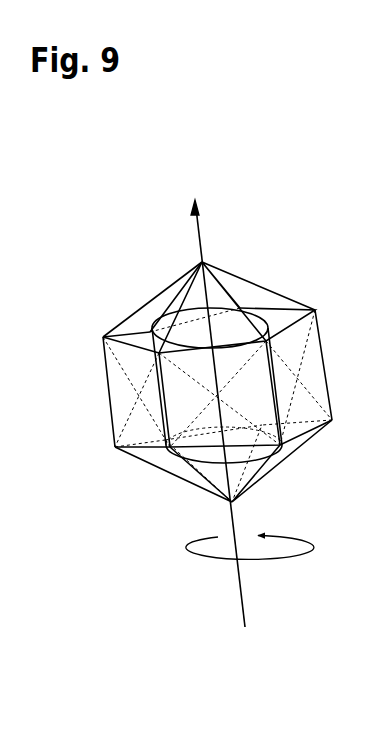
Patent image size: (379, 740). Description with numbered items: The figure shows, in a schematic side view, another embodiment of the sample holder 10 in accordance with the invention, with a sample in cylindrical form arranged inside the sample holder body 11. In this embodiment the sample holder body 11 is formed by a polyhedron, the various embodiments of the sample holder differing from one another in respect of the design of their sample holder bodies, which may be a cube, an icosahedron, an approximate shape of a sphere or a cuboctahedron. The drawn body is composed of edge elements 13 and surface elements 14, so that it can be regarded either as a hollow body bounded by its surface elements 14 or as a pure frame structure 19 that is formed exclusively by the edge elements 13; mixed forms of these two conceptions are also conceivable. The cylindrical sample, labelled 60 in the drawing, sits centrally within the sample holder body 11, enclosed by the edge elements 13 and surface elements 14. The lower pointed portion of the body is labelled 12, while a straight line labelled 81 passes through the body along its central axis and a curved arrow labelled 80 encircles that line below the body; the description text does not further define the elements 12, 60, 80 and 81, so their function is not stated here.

The sample holder 10 is at (211, 310).
The frame structure 19 is at (239, 182).
The sample holder body 11 is at (278, 293).
The lower pyramid portion 12 is at (155, 448).
The edge element 13 is at (160, 292).
The surface element 14 is at (156, 304).
The cylindrical inner body 60 is at (203, 415).
The direction of rotation 80 is at (188, 596).
The axis of rotation 81 is at (243, 582).